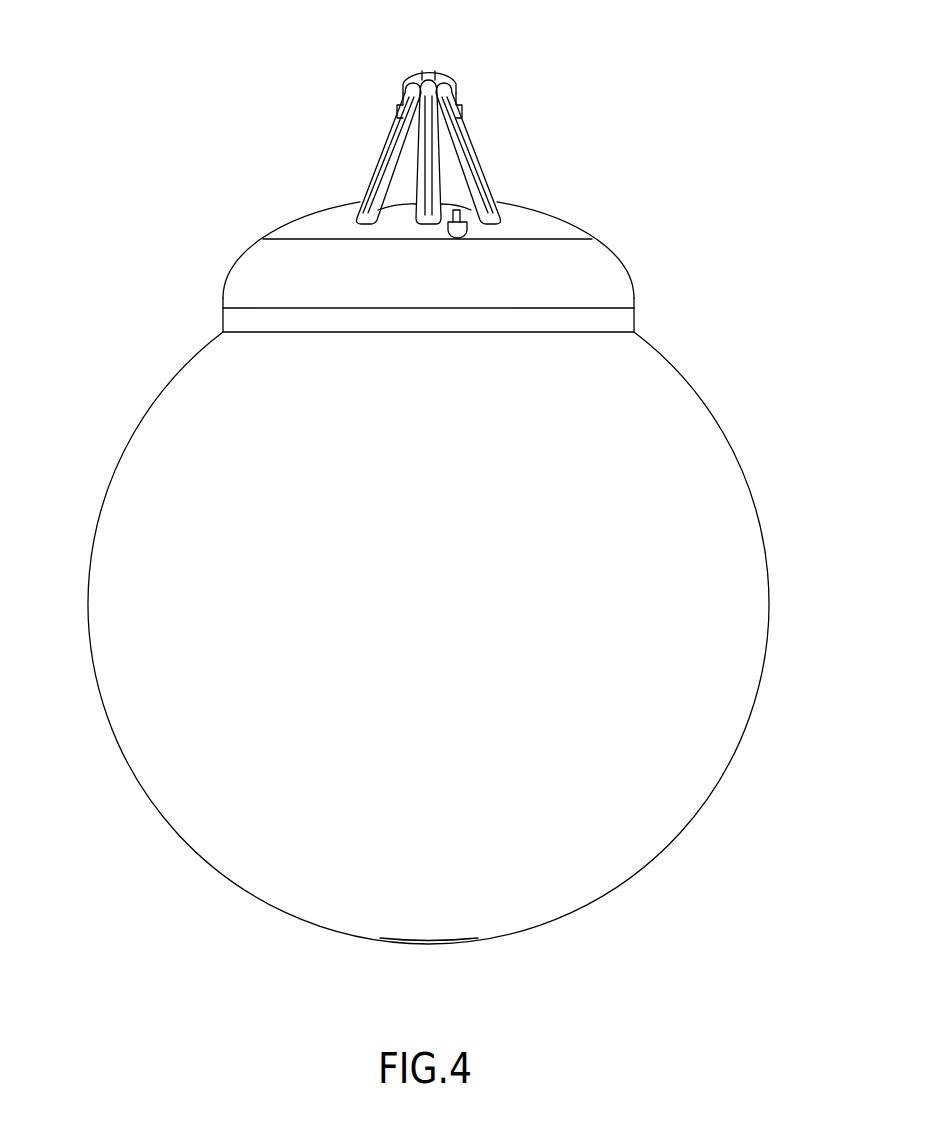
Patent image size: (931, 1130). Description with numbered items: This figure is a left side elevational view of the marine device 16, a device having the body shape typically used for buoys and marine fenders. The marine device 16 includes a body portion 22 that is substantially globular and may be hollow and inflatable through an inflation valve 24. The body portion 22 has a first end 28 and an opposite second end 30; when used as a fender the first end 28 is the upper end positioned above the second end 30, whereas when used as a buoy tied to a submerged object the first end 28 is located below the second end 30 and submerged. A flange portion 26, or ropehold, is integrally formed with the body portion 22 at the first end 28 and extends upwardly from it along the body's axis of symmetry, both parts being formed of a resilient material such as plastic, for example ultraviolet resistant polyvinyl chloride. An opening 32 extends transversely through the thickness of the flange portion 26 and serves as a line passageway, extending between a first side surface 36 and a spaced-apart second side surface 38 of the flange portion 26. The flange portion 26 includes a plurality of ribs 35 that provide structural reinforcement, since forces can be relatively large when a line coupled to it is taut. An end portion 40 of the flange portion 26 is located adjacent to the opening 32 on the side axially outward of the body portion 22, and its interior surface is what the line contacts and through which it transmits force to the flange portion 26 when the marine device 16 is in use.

The marine device 16 is at (138, 176).
The body portion 22 is at (692, 598).
The inflation valve 24 is at (468, 232).
The flange portion 26 is at (546, 152).
The first end 28 is at (645, 343).
The second end 30 is at (432, 943).
The opening 32 is at (478, 127).
The ribs 35 is at (384, 177).
The first side surface 36 is at (458, 95).
The second side surface 38 is at (400, 96).
The end portion 40 is at (428, 70).